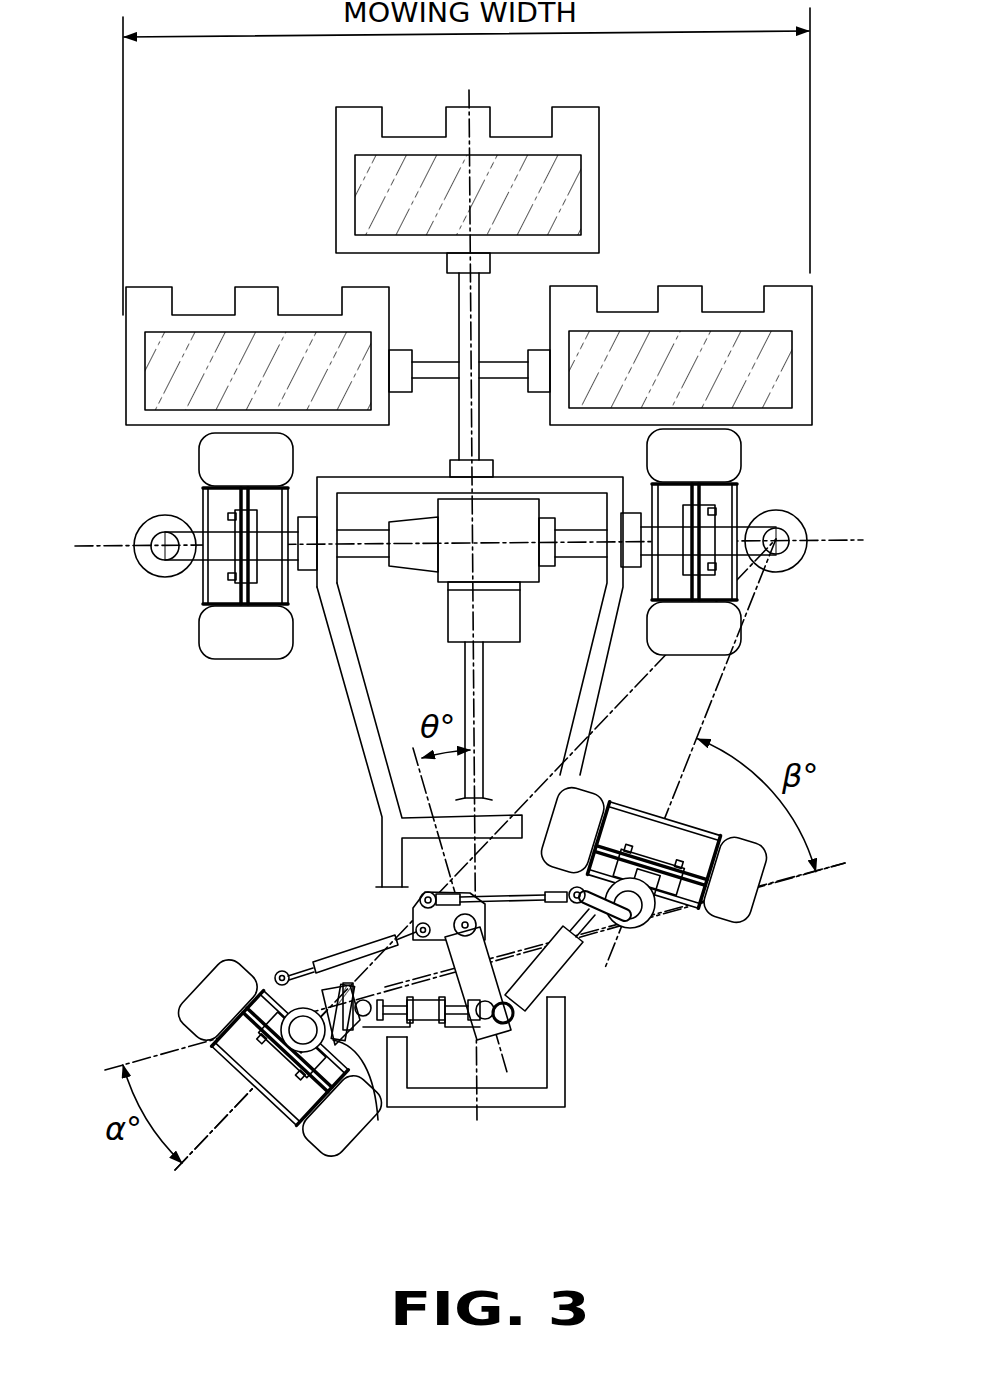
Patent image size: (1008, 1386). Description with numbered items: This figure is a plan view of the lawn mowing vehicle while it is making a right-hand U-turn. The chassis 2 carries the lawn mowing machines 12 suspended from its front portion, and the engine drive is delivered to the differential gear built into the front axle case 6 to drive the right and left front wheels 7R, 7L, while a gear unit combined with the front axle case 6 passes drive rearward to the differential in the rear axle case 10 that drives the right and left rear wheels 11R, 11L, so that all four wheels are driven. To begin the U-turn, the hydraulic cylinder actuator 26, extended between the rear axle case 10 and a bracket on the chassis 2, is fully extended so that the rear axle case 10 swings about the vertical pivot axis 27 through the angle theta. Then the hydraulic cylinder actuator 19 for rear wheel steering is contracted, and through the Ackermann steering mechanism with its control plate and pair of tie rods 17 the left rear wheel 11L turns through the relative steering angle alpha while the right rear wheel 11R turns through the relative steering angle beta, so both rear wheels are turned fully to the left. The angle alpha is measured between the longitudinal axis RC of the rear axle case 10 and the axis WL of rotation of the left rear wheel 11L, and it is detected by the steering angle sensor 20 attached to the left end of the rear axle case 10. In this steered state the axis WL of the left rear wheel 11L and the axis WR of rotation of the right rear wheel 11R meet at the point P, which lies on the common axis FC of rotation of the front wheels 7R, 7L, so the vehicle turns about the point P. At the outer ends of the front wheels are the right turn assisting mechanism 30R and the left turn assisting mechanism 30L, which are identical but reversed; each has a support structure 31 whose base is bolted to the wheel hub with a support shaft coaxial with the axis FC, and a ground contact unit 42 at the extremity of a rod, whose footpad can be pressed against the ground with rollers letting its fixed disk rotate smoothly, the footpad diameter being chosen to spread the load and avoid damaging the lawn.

The chassis 2 is at (352, 719).
The front axle case 6 is at (410, 571).
The left front wheel 7L is at (218, 640).
The right front wheel 7R is at (740, 453).
The rear axle case 10 is at (415, 955).
The left rear wheel 11L is at (207, 977).
The right rear wheel 11R is at (745, 910).
The lawn mowing machines 12 is at (336, 155).
The tie rods 17 is at (330, 947).
The hydraulic cylinder actuator 19 is at (568, 968).
The steering angle sensor 20 is at (385, 1070).
The hydraulic cylinder actuator 26 is at (424, 1033).
The vertical pivot axis 27 is at (560, 1000).
The support structure 31 is at (718, 530).
The ground contact unit 42 is at (788, 562).
The point P is at (835, 552).
The common axis of rotation of the front wheels FC is at (117, 550).
The left turn assisting mechanism 30L is at (132, 532).
The right turn assisting mechanism 30R is at (937, 496).
The axis of rotation of the left rear wheel WL is at (230, 1117).
The axis of rotation of the right rear wheel WR is at (727, 664).
The longitudinal axis of the rear axle case RC is at (832, 872).